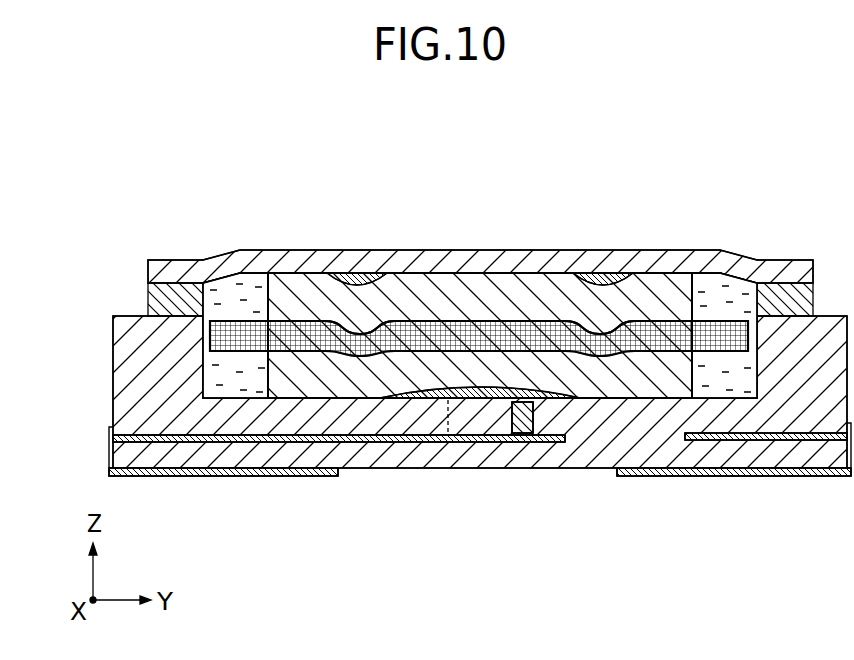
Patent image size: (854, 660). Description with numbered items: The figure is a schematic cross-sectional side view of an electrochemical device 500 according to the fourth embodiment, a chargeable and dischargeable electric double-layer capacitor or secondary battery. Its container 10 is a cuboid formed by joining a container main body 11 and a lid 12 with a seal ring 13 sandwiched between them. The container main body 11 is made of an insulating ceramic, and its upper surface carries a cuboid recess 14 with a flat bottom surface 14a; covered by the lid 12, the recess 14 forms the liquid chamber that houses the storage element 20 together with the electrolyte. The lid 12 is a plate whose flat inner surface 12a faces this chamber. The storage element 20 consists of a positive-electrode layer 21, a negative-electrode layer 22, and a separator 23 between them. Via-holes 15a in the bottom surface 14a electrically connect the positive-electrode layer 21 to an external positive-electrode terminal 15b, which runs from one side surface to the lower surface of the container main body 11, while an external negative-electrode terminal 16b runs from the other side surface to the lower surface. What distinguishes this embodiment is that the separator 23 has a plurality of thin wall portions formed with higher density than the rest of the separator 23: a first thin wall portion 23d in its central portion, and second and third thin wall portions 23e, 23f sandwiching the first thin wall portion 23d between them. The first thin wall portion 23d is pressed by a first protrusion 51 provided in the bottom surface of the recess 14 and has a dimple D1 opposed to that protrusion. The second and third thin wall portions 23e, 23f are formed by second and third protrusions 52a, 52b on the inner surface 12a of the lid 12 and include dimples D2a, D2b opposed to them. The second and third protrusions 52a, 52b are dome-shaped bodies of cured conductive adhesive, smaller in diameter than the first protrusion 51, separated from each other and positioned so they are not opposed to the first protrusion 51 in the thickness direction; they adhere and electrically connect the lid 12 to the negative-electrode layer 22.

The electrochemical device 500 is at (427, 331).
The container 10 is at (425, 359).
The container main body 11 is at (450, 392).
The lid 12 is at (147, 273).
The inner surface 12a is at (423, 275).
The seal ring 13 is at (147, 302).
The recess 14 is at (243, 395).
The bottom surface 14a is at (717, 395).
The via-holes 15a is at (547, 440).
The external positive-electrode terminal 15b is at (176, 476).
The external negative-electrode terminal 16b is at (787, 476).
The storage element 20 is at (479, 259).
The positive-electrode layer 21 is at (523, 377).
The negative-electrode layer 22 is at (462, 292).
The separator 23 is at (492, 323).
The first thin wall portion 23d is at (463, 393).
The second thin wall portion 23e is at (305, 280).
The third thin wall portion 23f is at (663, 280).
The first protrusion 51 is at (530, 421).
The second protrusion 52a is at (343, 285).
The third protrusion 52b is at (610, 285).
The dimple D1 is at (437, 358).
The dimple D2a is at (372, 330).
The dimple D2b is at (595, 330).